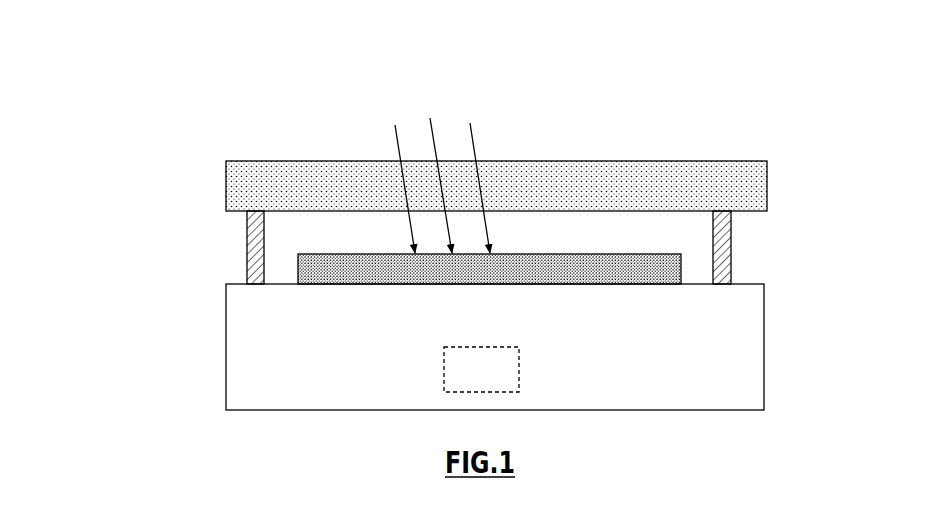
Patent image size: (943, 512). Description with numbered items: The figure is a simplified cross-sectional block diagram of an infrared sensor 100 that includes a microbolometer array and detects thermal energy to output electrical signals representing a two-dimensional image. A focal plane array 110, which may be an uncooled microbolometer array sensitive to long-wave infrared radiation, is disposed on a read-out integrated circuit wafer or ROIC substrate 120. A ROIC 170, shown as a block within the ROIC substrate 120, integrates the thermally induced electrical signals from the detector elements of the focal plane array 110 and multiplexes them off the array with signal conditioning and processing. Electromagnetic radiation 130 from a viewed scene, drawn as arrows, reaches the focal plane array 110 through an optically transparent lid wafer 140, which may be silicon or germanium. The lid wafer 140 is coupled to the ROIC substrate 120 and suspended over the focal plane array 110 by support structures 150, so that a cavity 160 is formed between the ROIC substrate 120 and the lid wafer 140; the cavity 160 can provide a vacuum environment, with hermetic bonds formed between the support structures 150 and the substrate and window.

The infrared sensor 100 is at (165, 125).
The focal plane array 110 is at (604, 284).
The ROIC substrate 120 is at (710, 328).
The electromagnetic radiation 130 is at (492, 137).
The lid wafer 140 is at (690, 182).
The support structure 150 is at (247, 244).
The cavity 160 is at (300, 233).
The ROIC 170 is at (519, 365).